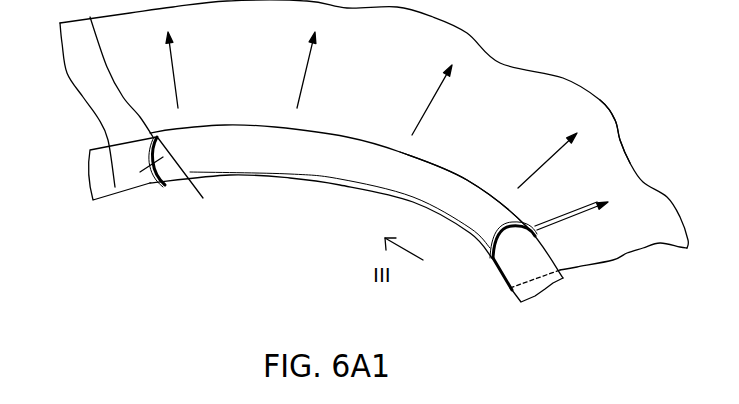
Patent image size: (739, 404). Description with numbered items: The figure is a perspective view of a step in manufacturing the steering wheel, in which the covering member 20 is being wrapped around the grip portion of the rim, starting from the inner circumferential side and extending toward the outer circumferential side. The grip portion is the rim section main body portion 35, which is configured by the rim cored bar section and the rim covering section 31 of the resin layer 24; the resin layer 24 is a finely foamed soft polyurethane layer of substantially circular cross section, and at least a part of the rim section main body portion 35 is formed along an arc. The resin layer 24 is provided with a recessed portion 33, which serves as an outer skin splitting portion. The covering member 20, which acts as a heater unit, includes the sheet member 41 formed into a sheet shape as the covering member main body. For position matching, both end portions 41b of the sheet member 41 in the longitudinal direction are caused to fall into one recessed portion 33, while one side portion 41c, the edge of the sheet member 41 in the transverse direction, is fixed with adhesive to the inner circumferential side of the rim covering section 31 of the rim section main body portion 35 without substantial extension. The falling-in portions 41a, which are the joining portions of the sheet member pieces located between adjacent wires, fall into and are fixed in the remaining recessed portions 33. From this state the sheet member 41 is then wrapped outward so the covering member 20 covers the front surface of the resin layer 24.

The covering member 20 is at (561, 78).
The sheet member 41 is at (615, 126).
The falling-in portion 41a is at (487, 237).
The end portion 41b is at (140, 172).
The side portion 41c is at (300, 178).
The rim covering section 31 is at (348, 136).
The resin layer 24 is at (467, 181).
The recessed portion 33 is at (165, 185).
The rim section main body portion 35 is at (563, 244).